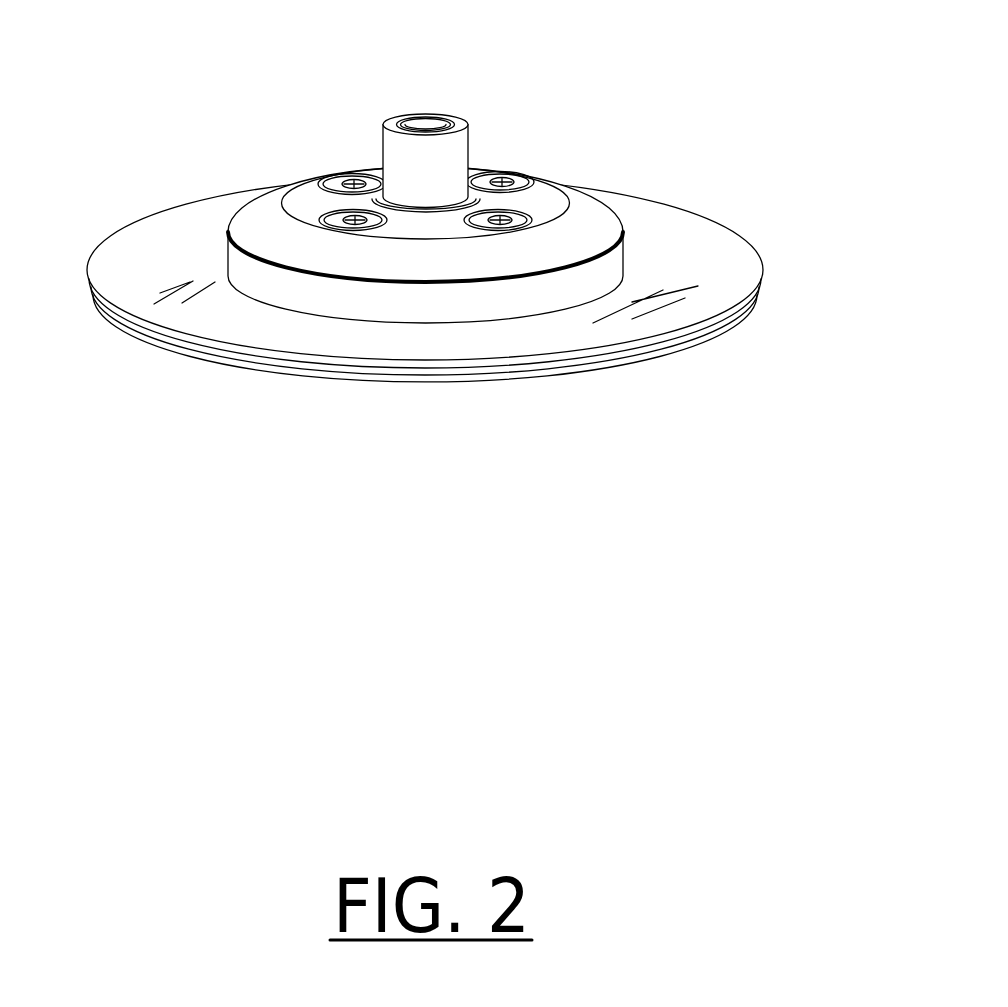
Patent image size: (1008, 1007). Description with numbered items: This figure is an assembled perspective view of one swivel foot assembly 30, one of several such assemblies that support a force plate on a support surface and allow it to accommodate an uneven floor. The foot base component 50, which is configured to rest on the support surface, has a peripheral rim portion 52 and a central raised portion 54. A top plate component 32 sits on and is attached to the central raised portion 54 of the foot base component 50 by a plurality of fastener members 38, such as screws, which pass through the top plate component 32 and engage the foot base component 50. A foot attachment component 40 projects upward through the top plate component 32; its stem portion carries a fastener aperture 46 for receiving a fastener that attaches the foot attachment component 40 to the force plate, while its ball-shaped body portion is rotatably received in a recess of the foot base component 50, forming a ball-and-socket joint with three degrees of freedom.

The swivel foot assembly 30 is at (462, 245).
The top plate component 32 is at (428, 257).
The fastener members 38 is at (338, 218).
The foot attachment component 40 is at (515, 112).
The fastener aperture 46 is at (427, 127).
The foot base component 50 is at (572, 378).
The peripheral rim portion 52 is at (685, 268).
The central raised portion 54 is at (243, 268).